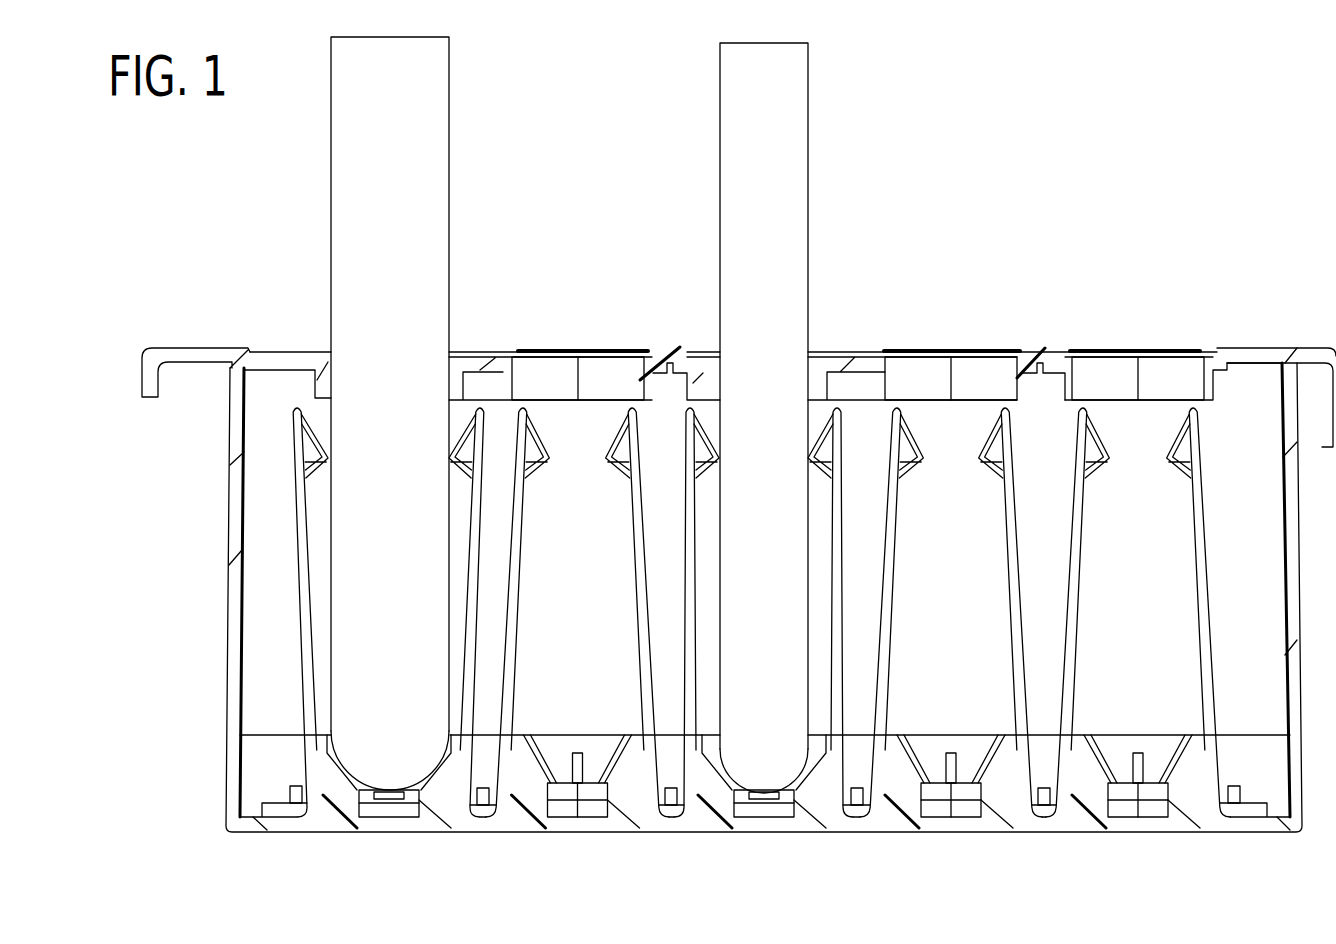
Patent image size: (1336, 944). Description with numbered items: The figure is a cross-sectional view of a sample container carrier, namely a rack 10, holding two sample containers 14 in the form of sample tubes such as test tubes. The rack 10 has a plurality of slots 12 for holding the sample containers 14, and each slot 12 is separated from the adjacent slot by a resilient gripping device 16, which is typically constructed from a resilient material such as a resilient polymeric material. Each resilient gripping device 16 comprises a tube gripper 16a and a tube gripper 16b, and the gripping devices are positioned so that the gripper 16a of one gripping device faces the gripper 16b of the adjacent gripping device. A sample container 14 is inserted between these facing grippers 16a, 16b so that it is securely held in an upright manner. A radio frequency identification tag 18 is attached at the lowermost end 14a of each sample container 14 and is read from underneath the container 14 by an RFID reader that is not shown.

The rack 10 is at (230, 600).
The slot 12 is at (592, 325).
The sample container 14 is at (352, 147).
The lowermost end 14a is at (392, 778).
The resilient gripping device 16 is at (755, 550).
The tube gripper 16a is at (905, 440).
The tube gripper 16b is at (992, 435).
The radio frequency identification tag 18 is at (388, 798).